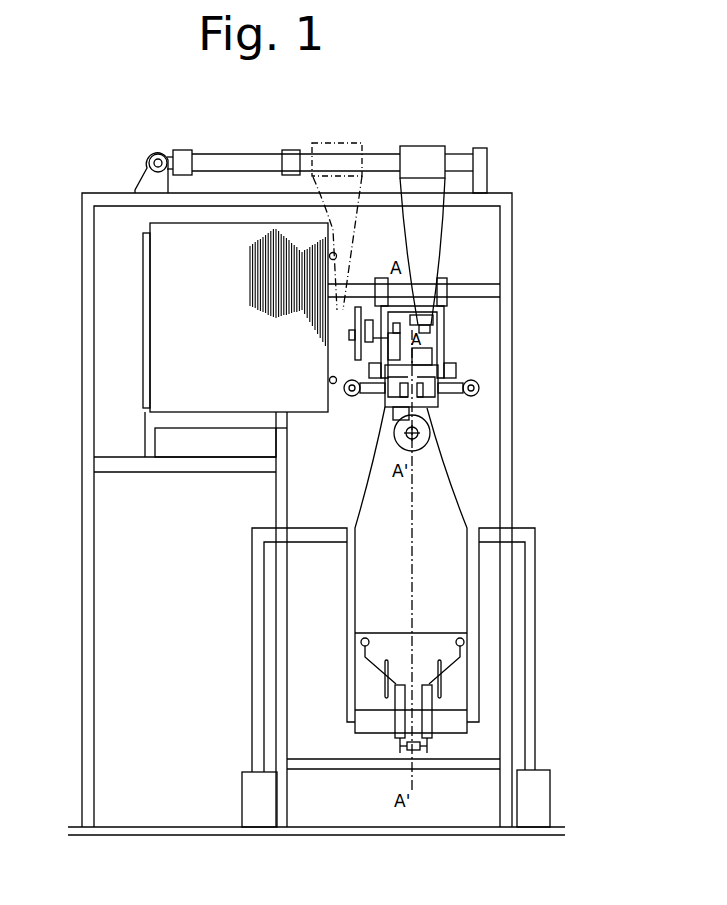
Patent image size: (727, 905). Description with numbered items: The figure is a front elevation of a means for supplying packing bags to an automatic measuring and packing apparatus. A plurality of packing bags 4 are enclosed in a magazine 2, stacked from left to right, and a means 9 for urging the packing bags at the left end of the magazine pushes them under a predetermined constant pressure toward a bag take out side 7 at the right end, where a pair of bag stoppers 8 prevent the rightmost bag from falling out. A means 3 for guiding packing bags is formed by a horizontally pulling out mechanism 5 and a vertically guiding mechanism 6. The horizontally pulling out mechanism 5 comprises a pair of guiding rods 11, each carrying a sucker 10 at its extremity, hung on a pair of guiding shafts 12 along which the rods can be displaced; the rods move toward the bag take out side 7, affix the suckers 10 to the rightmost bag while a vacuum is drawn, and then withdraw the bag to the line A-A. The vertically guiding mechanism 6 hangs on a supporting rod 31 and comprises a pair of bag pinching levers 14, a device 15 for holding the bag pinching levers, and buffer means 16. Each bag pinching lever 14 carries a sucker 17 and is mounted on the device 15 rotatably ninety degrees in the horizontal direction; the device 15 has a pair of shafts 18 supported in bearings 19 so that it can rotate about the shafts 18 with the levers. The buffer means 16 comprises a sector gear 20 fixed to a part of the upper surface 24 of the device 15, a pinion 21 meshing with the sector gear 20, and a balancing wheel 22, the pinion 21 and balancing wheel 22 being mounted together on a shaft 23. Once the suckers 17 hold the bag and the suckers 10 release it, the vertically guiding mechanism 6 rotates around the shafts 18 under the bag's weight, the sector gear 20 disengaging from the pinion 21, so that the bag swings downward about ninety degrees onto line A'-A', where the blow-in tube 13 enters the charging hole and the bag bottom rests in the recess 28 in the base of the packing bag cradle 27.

The magazine 2 is at (235, 317).
The means for guiding packing bags 3 is at (454, 257).
The packing bags 4 is at (271, 510).
The horizontally pulling out mechanism 5 is at (407, 131).
The vertically guiding mechanism 6 is at (433, 354).
The bag take out side 7 is at (362, 337).
The bag stoppers 8 is at (337, 255).
The means for urging the packing bags 9 is at (290, 516).
The sucker 10 is at (440, 300).
The guiding rods 11 is at (437, 236).
The guiding shafts 12 is at (381, 160).
The blow-in tube 13 is at (416, 443).
The bag pinching levers 14 is at (463, 398).
The device for holding the bag pinching levers 15 is at (445, 381).
The buffer means 16 is at (367, 307).
The sucker 17 is at (480, 389).
The shafts 18 is at (441, 377).
The bearings 19 is at (448, 366).
The sector gear 20 is at (452, 352).
The pinion 21 is at (432, 338).
The balancing wheel 22 is at (350, 360).
The shaft 23 is at (350, 340).
The upper surface of device 24 is at (377, 402).
The packing bag cradle 27 is at (360, 727).
The recess 28 is at (427, 745).
The supporting rod 31 is at (488, 285).